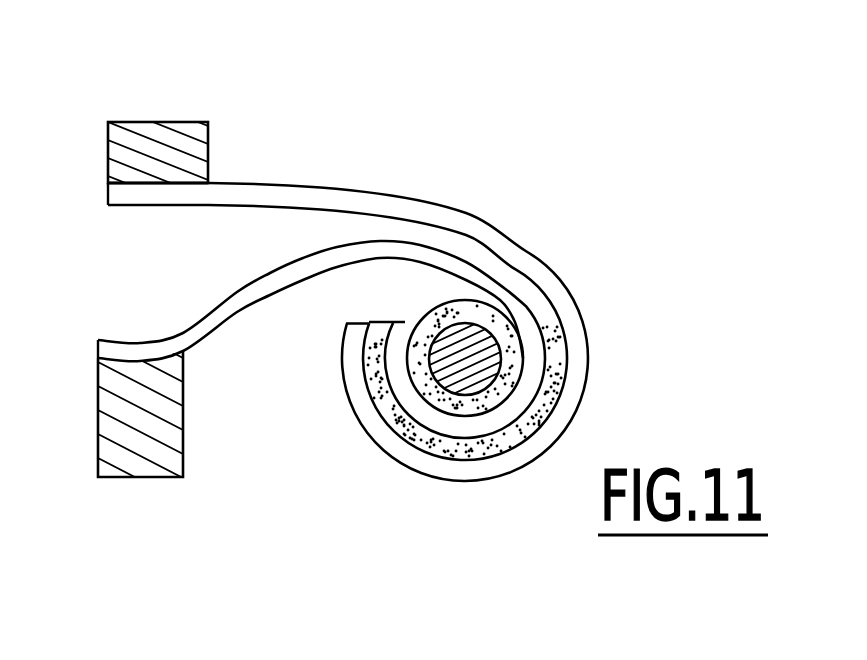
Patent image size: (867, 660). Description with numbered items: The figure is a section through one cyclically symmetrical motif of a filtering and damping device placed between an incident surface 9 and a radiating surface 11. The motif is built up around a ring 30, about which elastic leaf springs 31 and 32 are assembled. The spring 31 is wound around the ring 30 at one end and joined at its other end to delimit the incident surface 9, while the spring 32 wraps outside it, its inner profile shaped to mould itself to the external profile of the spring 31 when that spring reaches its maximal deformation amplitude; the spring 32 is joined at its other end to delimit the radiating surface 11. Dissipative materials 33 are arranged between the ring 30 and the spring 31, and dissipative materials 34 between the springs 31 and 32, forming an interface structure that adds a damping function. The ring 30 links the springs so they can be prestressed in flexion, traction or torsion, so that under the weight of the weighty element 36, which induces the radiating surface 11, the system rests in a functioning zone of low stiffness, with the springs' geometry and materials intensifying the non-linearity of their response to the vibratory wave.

The incident surface 9 is at (128, 381).
The radiating surface 11 is at (200, 168).
The ring 30 is at (463, 369).
The elastic leaf spring 31 is at (278, 289).
The elastic leaf spring 32 is at (356, 192).
The dissipative material 33 is at (504, 326).
The dissipative material 34 is at (553, 383).
The weighty element 36 is at (158, 158).